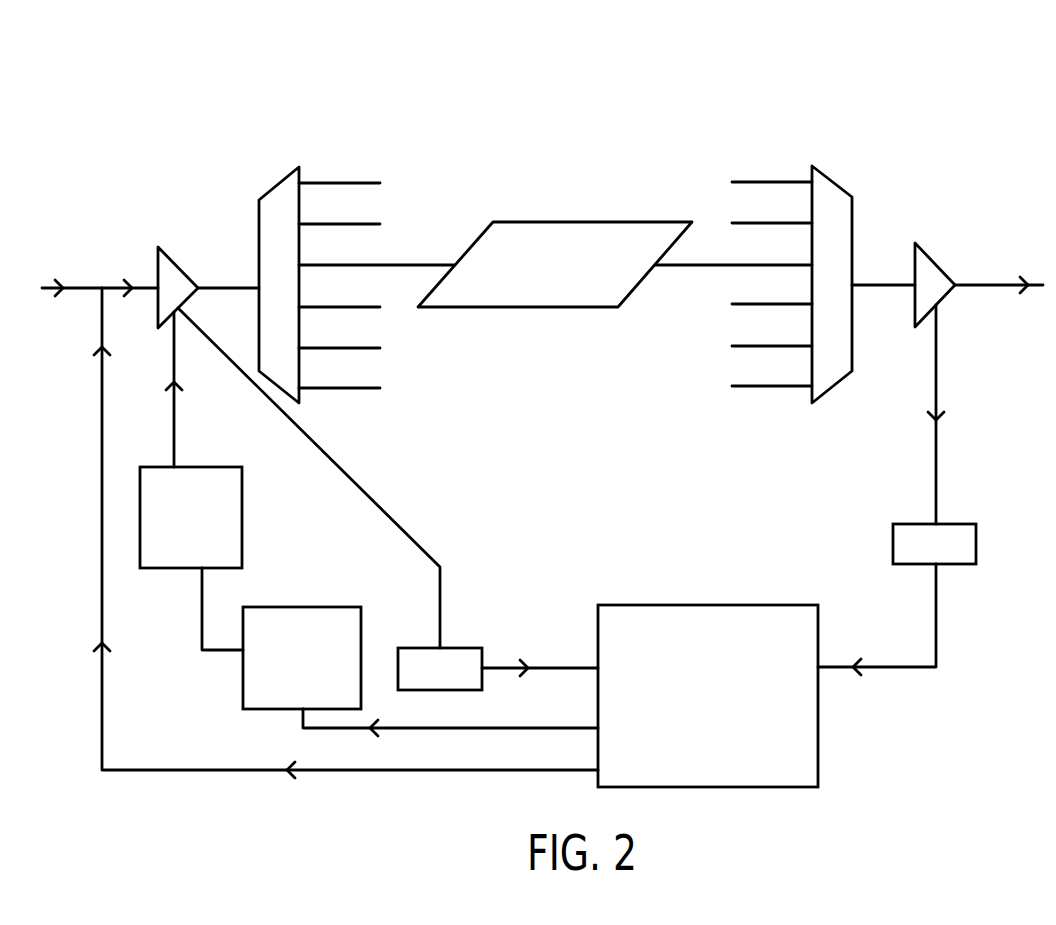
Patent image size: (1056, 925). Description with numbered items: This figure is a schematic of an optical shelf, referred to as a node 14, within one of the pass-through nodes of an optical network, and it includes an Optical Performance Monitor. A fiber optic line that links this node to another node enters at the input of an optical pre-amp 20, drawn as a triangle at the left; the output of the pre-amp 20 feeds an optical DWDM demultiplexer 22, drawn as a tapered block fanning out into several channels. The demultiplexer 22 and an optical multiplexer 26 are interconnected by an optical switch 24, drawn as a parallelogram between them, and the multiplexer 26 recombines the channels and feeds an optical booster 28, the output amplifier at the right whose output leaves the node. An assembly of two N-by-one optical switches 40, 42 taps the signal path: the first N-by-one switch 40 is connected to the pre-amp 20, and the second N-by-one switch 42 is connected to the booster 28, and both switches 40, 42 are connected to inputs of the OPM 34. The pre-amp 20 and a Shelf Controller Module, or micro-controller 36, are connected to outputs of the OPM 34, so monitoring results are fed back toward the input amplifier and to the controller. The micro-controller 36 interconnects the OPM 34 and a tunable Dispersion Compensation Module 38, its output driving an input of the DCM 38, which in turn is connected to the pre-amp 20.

The pass-through node 14 is at (190, 90).
The optical pre-amp 20 is at (170, 250).
The optical DWDM demultiplexer 22 is at (283, 173).
The optical switch 24 is at (567, 222).
The optical multiplexer 26 is at (838, 182).
The optical booster 28 is at (928, 253).
The Optical Performance Monitor 34 is at (818, 755).
The Shelf Controller Module 36 is at (328, 607).
The tunable Dispersion Compensation Module 38 is at (242, 499).
The Nx1 optical switch (input tap) 40 is at (467, 648).
The Nx1 optical switch (output tap) 42 is at (954, 524).